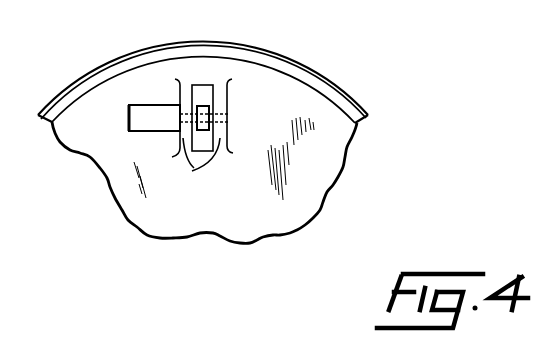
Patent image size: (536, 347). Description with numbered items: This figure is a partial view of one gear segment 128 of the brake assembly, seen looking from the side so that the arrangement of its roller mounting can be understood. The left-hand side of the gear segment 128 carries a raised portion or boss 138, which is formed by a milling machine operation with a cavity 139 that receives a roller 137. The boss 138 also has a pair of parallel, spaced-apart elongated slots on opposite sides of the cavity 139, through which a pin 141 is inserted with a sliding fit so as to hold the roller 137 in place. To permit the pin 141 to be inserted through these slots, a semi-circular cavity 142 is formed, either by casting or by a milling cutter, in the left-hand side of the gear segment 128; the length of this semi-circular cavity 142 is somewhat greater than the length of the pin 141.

The gear segment 128 is at (88, 110).
The semi-circular cavity 142 is at (143, 108).
The boss 138 is at (192, 169).
The cavity 139 is at (209, 88).
The roller 137 is at (209, 106).
The pin 141 is at (219, 118).